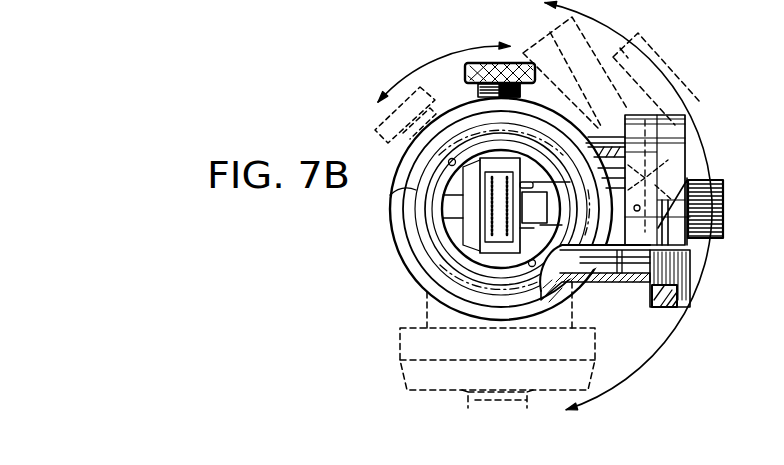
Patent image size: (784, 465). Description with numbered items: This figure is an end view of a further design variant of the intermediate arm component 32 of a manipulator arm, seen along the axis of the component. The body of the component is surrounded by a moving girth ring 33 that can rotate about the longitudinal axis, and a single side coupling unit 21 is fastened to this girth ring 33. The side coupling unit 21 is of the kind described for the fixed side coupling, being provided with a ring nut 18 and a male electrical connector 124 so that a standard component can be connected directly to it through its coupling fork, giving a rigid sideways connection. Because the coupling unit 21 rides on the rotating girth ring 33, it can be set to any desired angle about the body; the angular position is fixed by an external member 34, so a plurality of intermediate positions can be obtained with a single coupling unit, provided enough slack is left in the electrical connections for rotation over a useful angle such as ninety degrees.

The ring nut 18 is at (392, 190).
The side coupling unit 21 is at (603, 290).
The intermediate arm component 32 is at (413, 292).
The moving girth ring 33 is at (560, 296).
The external member 34 is at (463, 73).
The male electrical connector 124 is at (488, 232).